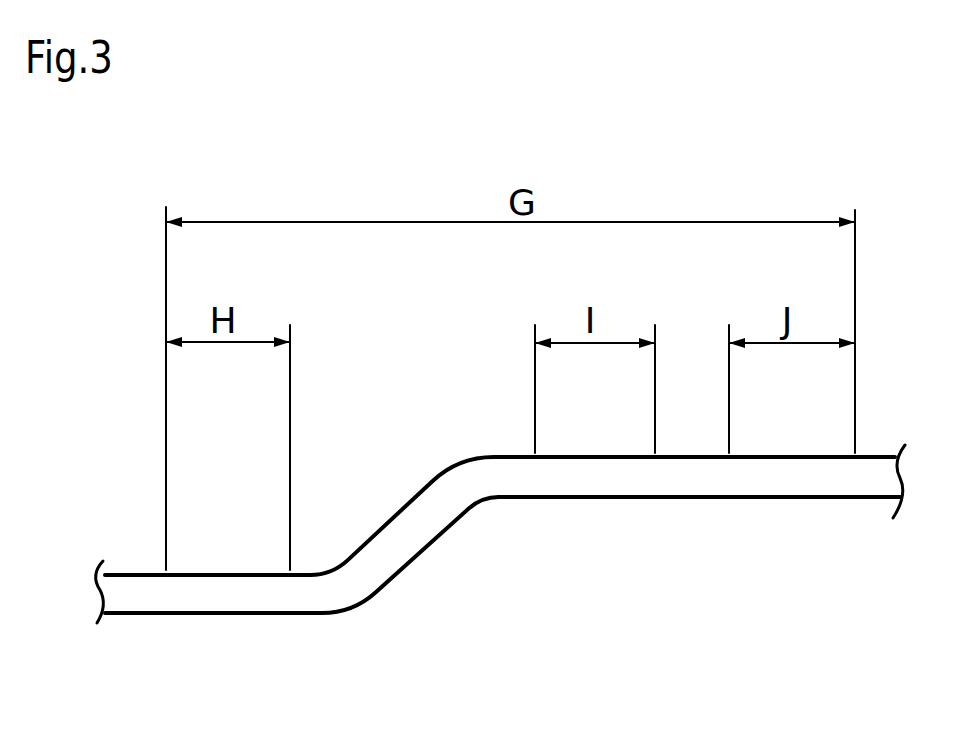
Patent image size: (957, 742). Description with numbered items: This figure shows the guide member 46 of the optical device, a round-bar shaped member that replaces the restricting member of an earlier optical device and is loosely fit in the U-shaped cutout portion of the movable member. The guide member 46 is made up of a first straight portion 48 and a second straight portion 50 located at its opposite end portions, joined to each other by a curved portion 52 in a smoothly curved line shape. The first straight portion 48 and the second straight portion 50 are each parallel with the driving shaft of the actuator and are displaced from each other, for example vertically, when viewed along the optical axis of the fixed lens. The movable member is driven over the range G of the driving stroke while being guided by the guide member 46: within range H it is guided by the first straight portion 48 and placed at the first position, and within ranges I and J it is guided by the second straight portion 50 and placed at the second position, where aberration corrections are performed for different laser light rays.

The guide member 46 is at (543, 498).
The first straight portion 48 is at (250, 613).
The second straight portion 50 is at (705, 498).
The curved portion 52 is at (431, 543).